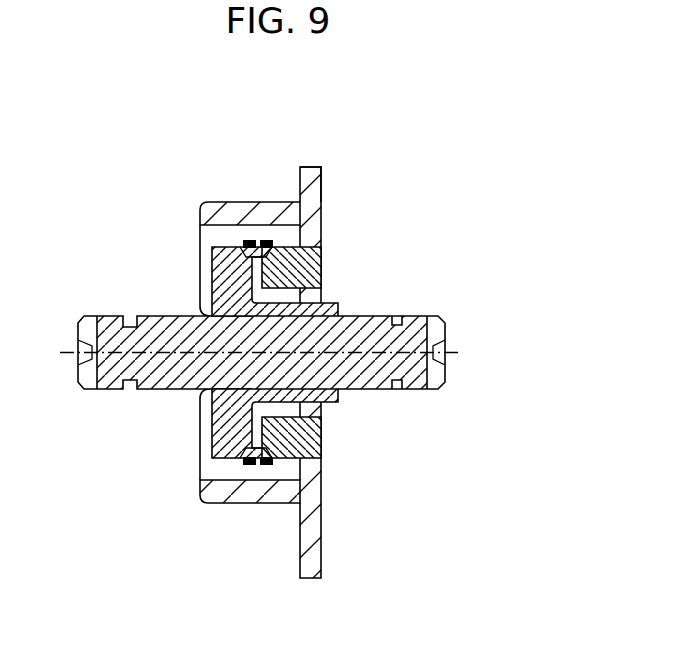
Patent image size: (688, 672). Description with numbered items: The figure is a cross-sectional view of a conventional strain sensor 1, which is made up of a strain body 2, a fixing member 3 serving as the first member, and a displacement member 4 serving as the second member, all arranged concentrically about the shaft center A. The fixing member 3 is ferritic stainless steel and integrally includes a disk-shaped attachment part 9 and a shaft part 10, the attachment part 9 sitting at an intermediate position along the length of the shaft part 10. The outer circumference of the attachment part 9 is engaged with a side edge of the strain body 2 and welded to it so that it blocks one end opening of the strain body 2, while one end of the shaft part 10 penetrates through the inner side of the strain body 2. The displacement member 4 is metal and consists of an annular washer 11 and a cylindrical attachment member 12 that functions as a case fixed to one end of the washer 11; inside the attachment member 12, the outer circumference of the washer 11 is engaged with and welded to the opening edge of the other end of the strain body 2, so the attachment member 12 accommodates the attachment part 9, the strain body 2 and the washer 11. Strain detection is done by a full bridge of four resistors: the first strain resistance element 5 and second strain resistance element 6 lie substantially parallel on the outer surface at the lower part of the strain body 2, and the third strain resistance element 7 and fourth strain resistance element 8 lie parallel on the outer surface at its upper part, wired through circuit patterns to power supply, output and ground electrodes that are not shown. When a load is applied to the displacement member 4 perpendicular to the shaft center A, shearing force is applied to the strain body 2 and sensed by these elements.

The conventional strain sensor 1 is at (74, 106).
The strain body 2 is at (258, 240).
The fixing member 3 is at (158, 311).
The displacement member 4 is at (322, 212).
The first strain resistance element 5 is at (266, 468).
The second strain resistance element 6 is at (247, 468).
The third strain resistance element 7 is at (265, 240).
The fourth strain resistance element 8 is at (247, 240).
The attachment part 9 is at (217, 268).
The shaft part 10 is at (297, 380).
The washer 11 is at (321, 272).
The attachment member 12 is at (308, 176).
The shaft center A is at (462, 352).